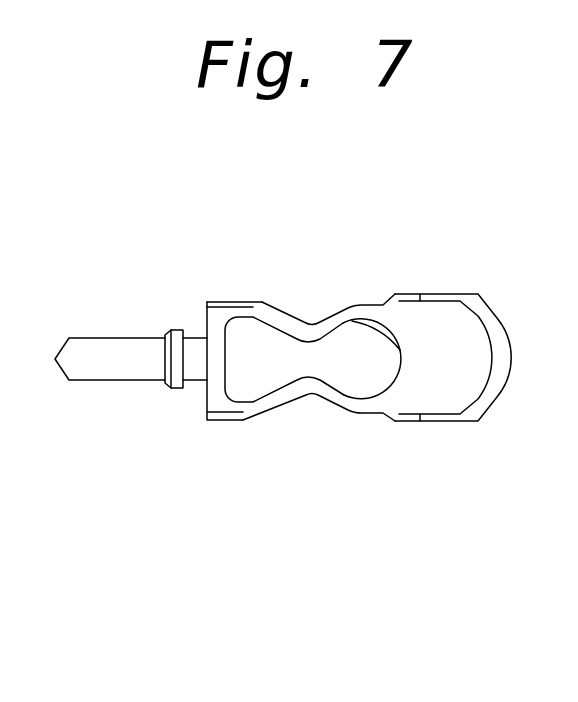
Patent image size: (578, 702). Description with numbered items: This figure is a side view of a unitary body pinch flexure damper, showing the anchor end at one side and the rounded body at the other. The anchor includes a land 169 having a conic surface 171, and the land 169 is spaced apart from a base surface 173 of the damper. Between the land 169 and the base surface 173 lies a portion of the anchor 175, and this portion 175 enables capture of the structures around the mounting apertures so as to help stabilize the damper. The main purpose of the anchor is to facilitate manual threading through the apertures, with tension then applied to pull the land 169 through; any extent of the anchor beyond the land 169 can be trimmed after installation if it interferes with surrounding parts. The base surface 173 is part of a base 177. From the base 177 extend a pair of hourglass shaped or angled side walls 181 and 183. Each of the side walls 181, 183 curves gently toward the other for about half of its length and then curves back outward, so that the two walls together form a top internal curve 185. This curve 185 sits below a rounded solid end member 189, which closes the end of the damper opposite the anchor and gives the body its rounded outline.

The land 169 is at (176, 330).
The conic surface 171 is at (166, 389).
The base surface 173 is at (206, 395).
The portion of the anchor 175 is at (197, 332).
The base 177 is at (220, 378).
The side wall 181 is at (327, 329).
The side wall 183 is at (339, 394).
The top internal curve 185 is at (355, 325).
The rounded solid end member 189 is at (443, 326).